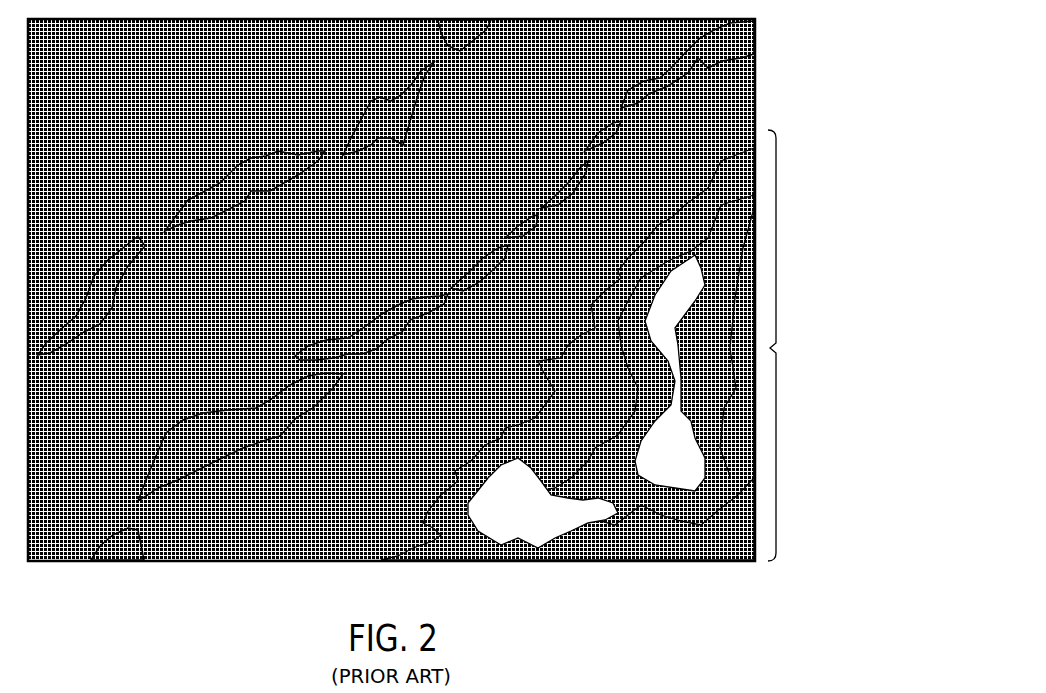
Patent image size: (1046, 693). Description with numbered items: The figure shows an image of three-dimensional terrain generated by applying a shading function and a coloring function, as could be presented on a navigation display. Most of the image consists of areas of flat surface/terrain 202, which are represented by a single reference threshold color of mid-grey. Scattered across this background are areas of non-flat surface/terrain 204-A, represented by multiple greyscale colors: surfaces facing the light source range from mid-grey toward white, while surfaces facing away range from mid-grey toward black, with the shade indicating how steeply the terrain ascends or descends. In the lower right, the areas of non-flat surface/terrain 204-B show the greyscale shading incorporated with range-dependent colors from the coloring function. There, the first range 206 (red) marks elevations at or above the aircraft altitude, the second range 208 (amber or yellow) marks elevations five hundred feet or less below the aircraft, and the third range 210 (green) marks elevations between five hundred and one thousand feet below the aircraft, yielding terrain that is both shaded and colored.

The areas of flat surface/terrain 202 is at (235, 73).
The areas of non-flat surface/terrain 204-A is at (403, 116).
The areas of non-flat surface/terrain 204-B is at (840, 345).
The first range 206 is at (676, 466).
The second range 208 is at (678, 302).
The third range 210 is at (601, 374).